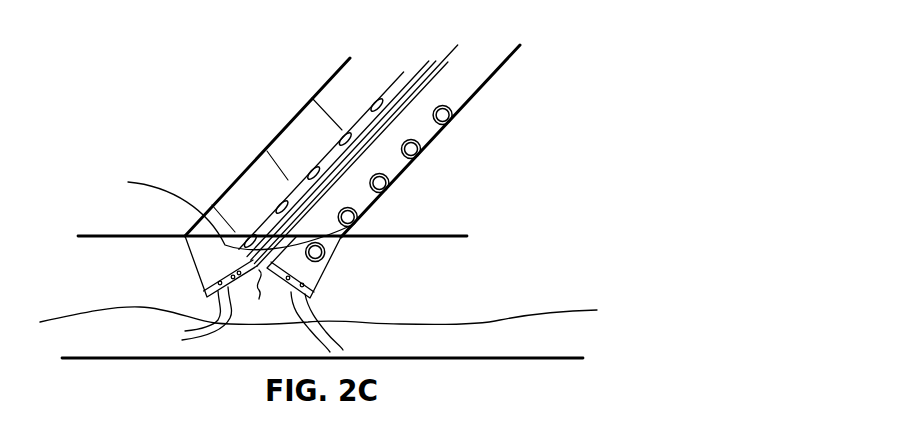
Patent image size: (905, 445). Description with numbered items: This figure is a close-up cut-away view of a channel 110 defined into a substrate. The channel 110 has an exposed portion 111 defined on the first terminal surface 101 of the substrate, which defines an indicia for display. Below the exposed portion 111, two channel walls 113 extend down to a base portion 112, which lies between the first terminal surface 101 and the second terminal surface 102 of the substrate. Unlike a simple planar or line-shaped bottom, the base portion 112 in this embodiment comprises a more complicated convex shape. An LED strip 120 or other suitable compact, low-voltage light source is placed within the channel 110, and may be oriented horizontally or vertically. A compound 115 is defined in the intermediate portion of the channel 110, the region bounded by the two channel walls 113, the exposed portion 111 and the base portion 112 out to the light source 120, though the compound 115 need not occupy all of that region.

The channel 110 is at (343, 98).
The exposed portion 111 is at (252, 215).
The LED strip 120 is at (307, 167).
The compound 115 is at (218, 211).
The first terminal surface 101 is at (152, 236).
The channel walls 113 is at (189, 258).
The base portion 112 is at (257, 297).
The second terminal surface 102 is at (484, 358).